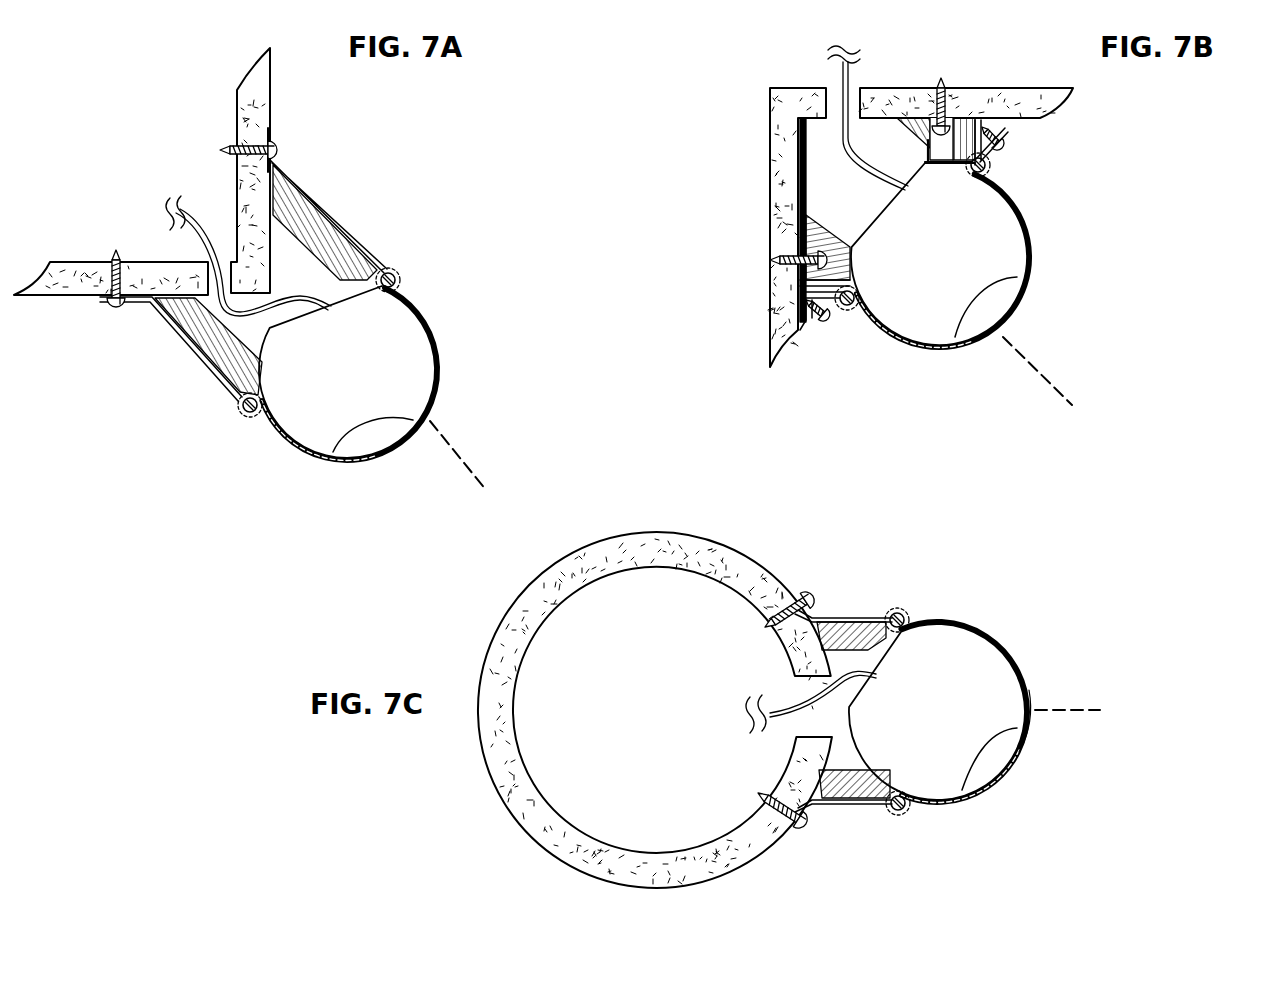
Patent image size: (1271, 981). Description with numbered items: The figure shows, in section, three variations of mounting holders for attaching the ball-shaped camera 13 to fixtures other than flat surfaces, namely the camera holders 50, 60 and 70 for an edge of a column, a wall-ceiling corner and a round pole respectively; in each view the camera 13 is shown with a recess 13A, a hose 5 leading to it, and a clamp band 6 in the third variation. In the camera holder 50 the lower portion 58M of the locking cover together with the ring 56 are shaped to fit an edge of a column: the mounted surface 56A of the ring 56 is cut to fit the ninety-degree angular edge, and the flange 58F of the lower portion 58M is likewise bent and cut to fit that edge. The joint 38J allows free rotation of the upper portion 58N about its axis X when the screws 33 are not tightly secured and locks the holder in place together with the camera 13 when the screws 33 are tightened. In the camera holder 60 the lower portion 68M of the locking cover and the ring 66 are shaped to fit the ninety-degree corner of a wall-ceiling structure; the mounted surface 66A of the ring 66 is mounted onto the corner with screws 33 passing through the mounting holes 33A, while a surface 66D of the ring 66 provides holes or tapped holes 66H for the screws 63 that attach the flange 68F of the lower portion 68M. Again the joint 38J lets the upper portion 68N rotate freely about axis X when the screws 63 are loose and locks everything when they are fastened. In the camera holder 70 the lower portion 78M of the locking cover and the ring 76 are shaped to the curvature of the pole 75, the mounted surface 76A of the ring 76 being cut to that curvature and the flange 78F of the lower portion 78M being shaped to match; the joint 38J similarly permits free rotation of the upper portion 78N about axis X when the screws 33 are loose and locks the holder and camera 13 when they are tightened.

In FIG. 7A, the hose 5 is at (206, 232).
In FIG. 7B, the hose 5 is at (858, 88).
In FIG. 7C, the hose 5 is at (776, 700).
In FIG. 7C, the clamp band 6 is at (1030, 722).
In FIG. 7A, the ball-shaped camera 13 is at (414, 388).
In FIG. 7B, the ball-shaped camera 13 is at (1004, 256).
In FIG. 7C, the ball-shaped camera 13 is at (1004, 675).
In FIG. 7A, the ball recess 13A is at (379, 434).
In FIG. 7B, the ball recess 13A is at (985, 335).
In FIG. 7C, the ball recess 13A is at (995, 770).
In FIG. 7A, the screws 33 is at (120, 320).
In FIG. 7B, the screws 33 is at (790, 262).
In FIG. 7C, the screws 33 is at (814, 600).
In FIG. 7B, the mounting holes 33A is at (955, 158).
In FIG. 7A, the joint 38J is at (401, 276).
In FIG. 7B, the joint 38J is at (993, 162).
In FIG. 7C, the joint 38J is at (906, 608).
In FIG. 7A, the camera holder 50 is at (522, 184).
In FIG. 7A, the ring 56 is at (314, 218).
In FIG. 7A, the mounted surface 56A is at (152, 305).
In FIG. 7A, the flange 58F is at (270, 137).
In FIG. 7A, the lower portion 58M is at (348, 236).
In FIG. 7A, the upper portion 58N is at (440, 336).
In FIG. 7B, the camera holder 60 is at (1195, 211).
In FIG. 7B, the screws 63 is at (1010, 140).
In FIG. 7B, the ring 66 is at (812, 216).
In FIG. 7B, the mounted surface 66A is at (803, 283).
In FIG. 7B, the surface 66D is at (820, 314).
In FIG. 7B, the holes or tapped holes 66H is at (998, 124).
In FIG. 7B, the flange 68F is at (806, 322).
In FIG. 7B, the lower portion 68M is at (843, 313).
In FIG. 7B, the upper portion 68N is at (1030, 212).
In FIG. 7C, the camera holder 70 is at (1142, 588).
In FIG. 7C, the pole 75 is at (670, 533).
In FIG. 7C, the ring 76 is at (862, 628).
In FIG. 7C, the mounted surface 76A is at (830, 802).
In FIG. 7C, the flange 78F is at (790, 830).
In FIG. 7C, the lower portion 78M is at (845, 618).
In FIG. 7C, the upper portion 78N is at (973, 618).